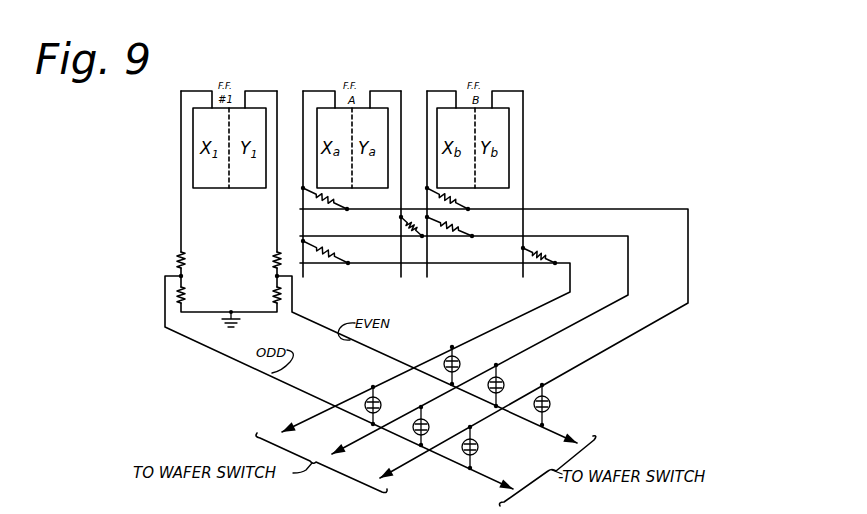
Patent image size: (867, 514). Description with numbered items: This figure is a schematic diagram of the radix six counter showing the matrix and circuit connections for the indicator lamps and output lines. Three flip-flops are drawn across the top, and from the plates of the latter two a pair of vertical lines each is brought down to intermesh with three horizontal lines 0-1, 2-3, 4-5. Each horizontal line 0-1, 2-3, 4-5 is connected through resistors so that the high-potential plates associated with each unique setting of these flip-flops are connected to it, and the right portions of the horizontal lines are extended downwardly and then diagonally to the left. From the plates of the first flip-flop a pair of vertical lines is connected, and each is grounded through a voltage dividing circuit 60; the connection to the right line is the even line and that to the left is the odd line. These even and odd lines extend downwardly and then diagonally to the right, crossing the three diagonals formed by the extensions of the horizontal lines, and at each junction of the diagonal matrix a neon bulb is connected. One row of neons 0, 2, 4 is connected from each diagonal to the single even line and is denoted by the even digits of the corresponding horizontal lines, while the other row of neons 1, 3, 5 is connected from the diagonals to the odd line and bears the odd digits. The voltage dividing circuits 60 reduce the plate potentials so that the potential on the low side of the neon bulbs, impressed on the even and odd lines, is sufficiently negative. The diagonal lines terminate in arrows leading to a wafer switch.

The voltage dividing circuits 60 is at (276, 285).
The neon bulb 0 is at (549, 400).
The neon bulb 1 is at (477, 443).
The neon bulb 2 is at (503, 380).
The neon bulb 3 is at (428, 422).
The neon bulb 4 is at (459, 359).
The neon bulb 5 is at (380, 400).
The horizontal line 0-1 is at (494, 337).
The horizontal line 2-3 is at (464, 339).
The horizontal line 4-5 is at (430, 341).